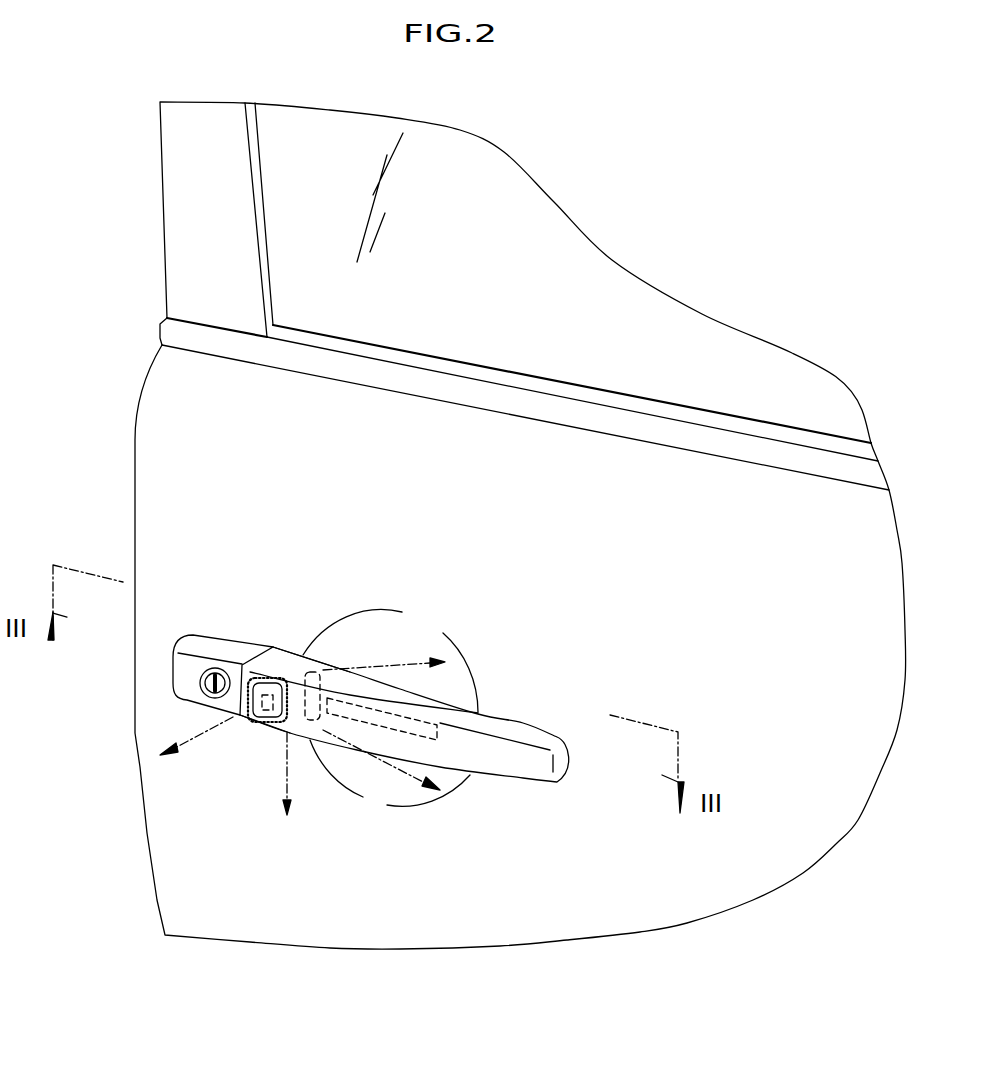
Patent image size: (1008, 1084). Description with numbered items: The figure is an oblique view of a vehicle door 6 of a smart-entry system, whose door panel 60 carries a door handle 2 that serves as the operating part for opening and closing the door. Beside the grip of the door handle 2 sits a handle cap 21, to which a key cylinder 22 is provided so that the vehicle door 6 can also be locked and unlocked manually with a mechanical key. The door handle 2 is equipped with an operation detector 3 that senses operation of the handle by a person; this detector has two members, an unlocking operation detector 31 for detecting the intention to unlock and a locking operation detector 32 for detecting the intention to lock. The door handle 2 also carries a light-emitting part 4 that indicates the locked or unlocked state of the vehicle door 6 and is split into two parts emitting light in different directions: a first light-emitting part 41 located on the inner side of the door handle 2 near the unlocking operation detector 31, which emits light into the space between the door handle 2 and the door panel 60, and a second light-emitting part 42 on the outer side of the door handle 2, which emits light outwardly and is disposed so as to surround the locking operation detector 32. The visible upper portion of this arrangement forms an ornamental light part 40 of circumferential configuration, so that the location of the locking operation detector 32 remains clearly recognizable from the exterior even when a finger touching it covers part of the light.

The door handle 2 is at (314, 711).
The operation detector 3 is at (388, 649).
The light-emitting part 4 is at (259, 681).
The vehicle door 6 is at (137, 417).
The handle cap 21 is at (187, 690).
The key cylinder 22 is at (210, 670).
The unlocking operation detector 31 is at (453, 727).
The locking operation detector 32 is at (242, 660).
The ornamental light part 40 is at (273, 722).
The first light-emitting part 41 is at (302, 658).
The second light-emitting part 42 is at (255, 715).
The door panel 60 is at (217, 902).